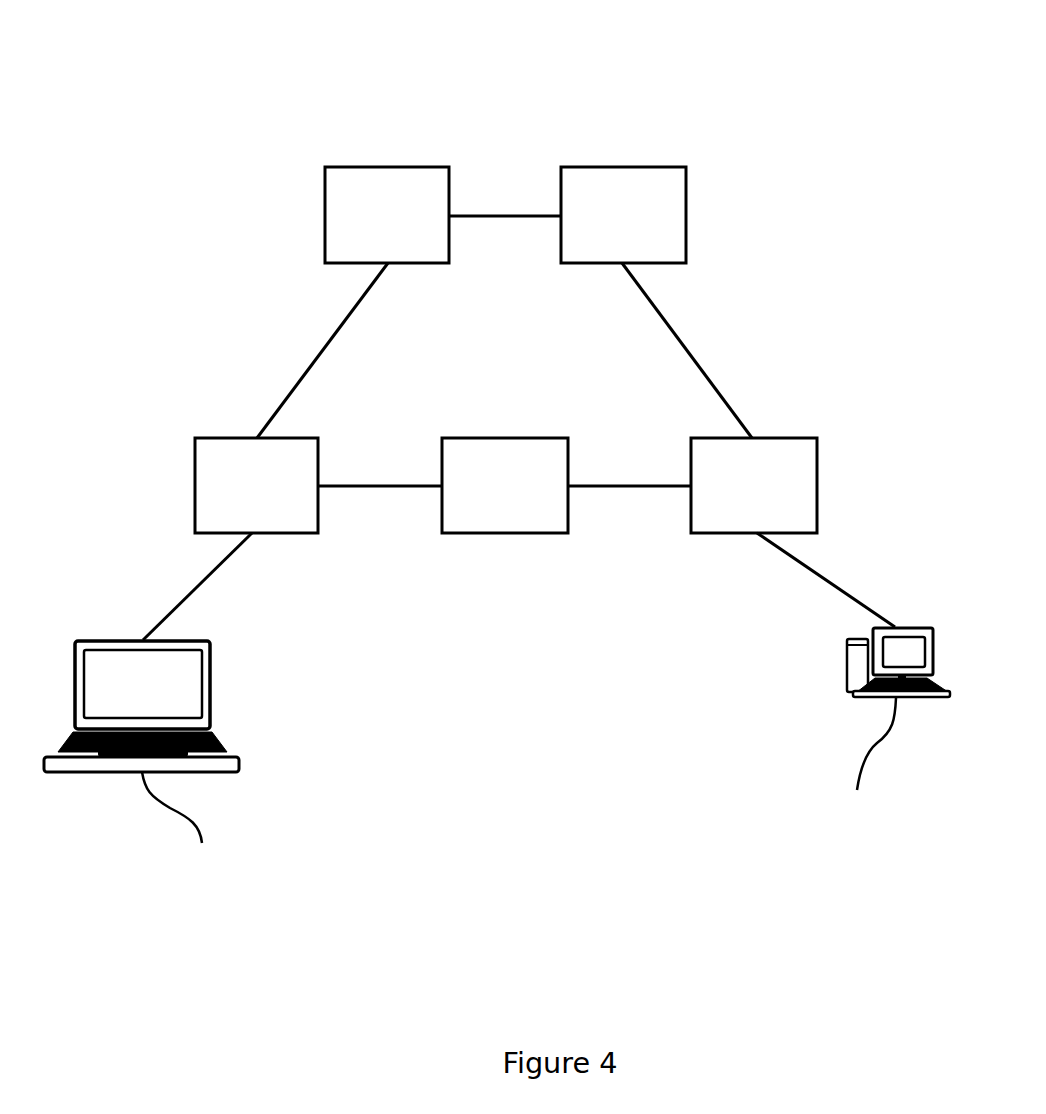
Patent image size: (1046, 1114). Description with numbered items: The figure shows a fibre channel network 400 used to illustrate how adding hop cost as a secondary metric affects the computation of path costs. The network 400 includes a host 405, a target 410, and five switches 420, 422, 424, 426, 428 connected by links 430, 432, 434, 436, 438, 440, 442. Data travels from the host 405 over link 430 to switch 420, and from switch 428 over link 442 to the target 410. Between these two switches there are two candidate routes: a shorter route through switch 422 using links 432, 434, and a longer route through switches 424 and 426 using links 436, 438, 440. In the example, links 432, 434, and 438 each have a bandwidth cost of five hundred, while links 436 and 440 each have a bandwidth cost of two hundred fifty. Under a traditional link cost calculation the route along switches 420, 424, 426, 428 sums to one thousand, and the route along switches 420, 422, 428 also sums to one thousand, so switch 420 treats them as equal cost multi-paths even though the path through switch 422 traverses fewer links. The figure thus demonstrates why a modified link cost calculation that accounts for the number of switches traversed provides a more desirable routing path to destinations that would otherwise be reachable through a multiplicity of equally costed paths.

The fibre channel network 400 is at (773, 91).
The host 405 is at (141, 763).
The target 410 is at (890, 730).
The switch 420 is at (232, 491).
The switch 422 is at (481, 491).
The switch 424 is at (363, 220).
The switch 426 is at (599, 220).
The switch 428 is at (730, 491).
The link 430 is at (157, 577).
The link 432 is at (376, 519).
The link 434 is at (631, 524).
The link 436 is at (277, 353).
The link 438 is at (500, 168).
The link 440 is at (720, 344).
The link 442 is at (868, 564).